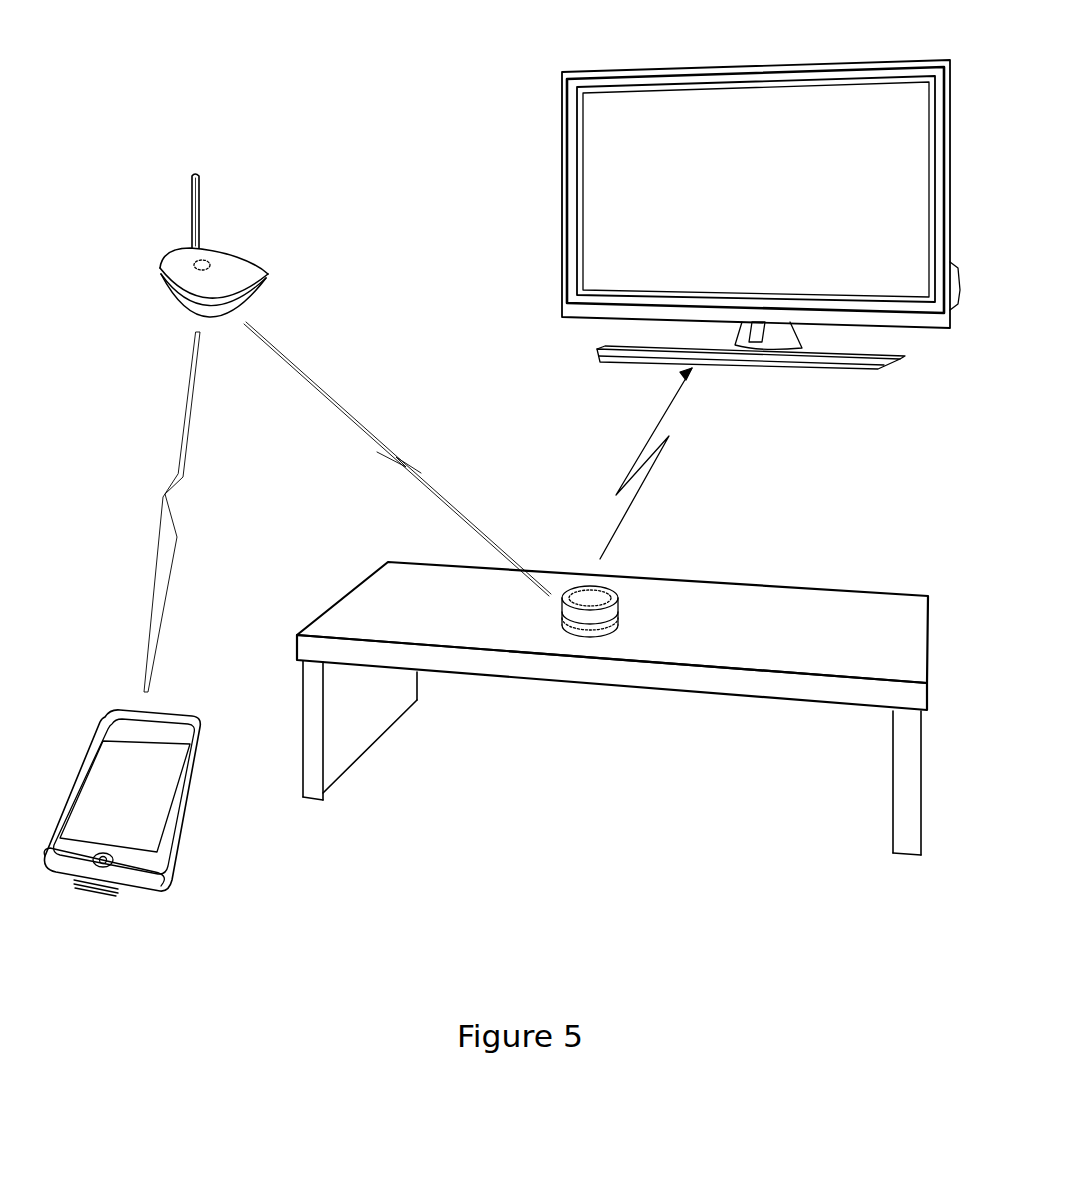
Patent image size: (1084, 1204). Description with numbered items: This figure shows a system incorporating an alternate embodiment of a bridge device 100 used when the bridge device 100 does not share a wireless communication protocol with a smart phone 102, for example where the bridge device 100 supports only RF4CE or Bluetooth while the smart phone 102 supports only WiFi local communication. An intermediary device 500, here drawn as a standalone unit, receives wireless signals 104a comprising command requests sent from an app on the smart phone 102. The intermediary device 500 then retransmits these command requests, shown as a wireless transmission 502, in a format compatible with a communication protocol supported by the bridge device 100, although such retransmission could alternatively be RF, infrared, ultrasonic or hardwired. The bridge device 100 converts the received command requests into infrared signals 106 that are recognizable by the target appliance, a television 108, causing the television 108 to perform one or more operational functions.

The bridge device 100 is at (602, 577).
The smart phone 102 is at (138, 900).
The wireless signals 104a is at (177, 470).
The infrared signals 106 is at (641, 444).
The television 108 is at (683, 66).
The intermediary device 500 is at (245, 245).
The wireless transmission 502 is at (338, 402).